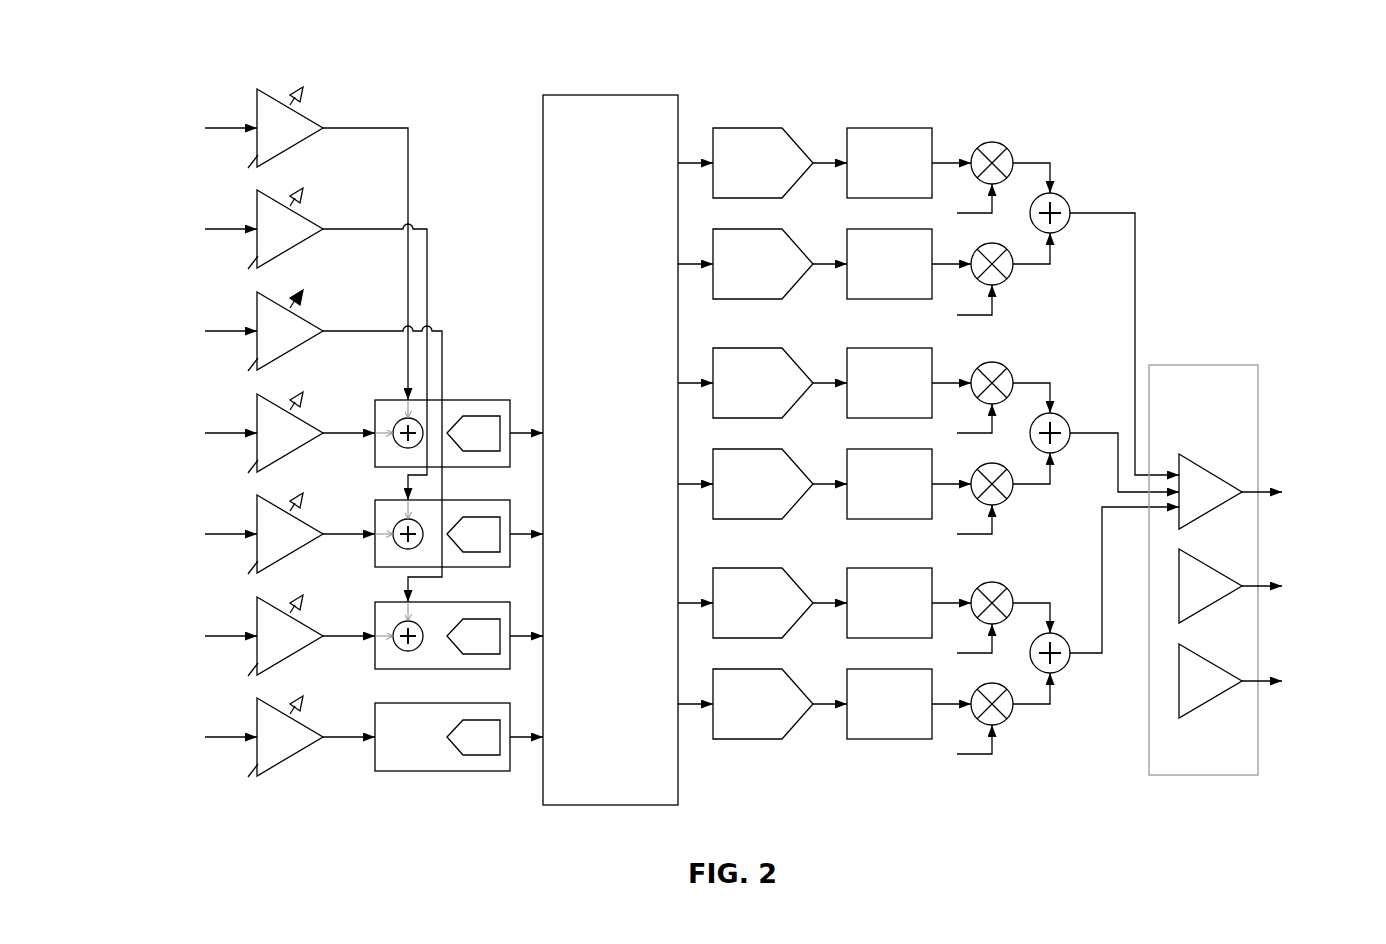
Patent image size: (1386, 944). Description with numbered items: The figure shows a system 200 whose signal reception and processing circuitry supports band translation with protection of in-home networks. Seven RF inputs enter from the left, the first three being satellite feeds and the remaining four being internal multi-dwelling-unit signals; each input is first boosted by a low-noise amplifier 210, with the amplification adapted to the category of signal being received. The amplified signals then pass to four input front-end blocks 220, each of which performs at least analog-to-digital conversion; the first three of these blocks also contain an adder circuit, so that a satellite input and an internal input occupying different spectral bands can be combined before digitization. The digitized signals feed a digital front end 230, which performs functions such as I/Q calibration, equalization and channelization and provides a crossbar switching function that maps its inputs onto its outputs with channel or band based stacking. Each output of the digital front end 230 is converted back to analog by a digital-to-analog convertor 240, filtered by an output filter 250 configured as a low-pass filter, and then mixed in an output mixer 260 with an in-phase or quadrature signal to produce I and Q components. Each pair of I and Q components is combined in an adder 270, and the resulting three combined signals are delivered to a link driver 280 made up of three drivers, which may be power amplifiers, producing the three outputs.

The system 200 is at (1222, 92).
The low-noise amplifier 210 is at (297, 142).
The input front-end block 220 is at (473, 467).
The digital front end 230 is at (597, 548).
The digital-to-analog convertor 240 is at (745, 433).
The output filter 250 is at (872, 433).
The output mixer 260 is at (1004, 149).
The adder 270 is at (1064, 199).
The link driver 280 is at (1189, 421).